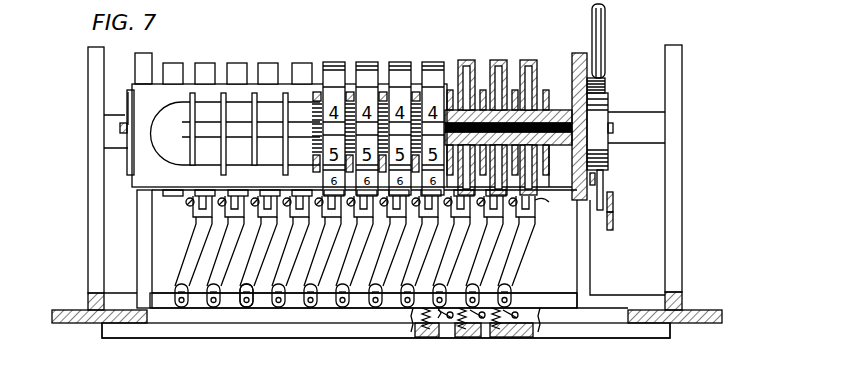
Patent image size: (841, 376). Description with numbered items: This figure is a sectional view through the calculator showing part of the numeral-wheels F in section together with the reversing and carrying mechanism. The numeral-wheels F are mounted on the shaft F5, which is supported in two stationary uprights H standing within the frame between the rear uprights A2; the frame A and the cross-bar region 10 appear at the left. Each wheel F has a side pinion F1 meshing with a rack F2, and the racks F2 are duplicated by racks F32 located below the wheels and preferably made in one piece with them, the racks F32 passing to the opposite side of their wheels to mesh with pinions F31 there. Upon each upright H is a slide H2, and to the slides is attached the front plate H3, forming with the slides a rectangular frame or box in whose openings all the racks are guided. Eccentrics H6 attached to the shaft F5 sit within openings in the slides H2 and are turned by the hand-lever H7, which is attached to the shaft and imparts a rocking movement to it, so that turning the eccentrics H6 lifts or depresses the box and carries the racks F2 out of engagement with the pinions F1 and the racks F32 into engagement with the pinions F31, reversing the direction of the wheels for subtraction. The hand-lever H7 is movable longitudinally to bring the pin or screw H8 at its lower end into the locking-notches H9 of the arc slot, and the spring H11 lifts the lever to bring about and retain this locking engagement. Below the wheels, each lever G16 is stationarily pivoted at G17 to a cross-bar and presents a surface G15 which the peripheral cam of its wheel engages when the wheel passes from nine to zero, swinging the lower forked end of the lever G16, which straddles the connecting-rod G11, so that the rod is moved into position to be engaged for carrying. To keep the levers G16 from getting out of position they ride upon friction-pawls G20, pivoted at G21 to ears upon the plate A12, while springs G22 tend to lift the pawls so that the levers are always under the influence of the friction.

The rear upright A2 is at (698, 213).
The frame A is at (160, 233).
The frame bar 10 is at (349, 265).
The stationary upright H is at (137, 204).
The front plate H3 is at (350, 120).
The numeral-wheel F is at (240, 63).
The rack F32 is at (253, 95).
The shaft F5 is at (508, 127).
The side pinion F1 is at (519, 97).
The rack F2 is at (258, 97).
The pinion F31 is at (539, 100).
The hand-lever H7 is at (606, 37).
The spring H11 is at (606, 82).
The eccentric H6 is at (609, 107).
The slide H2 is at (604, 178).
The pin or screw H8 is at (614, 205).
The locking-notch H9 is at (614, 219).
The pivot G17 is at (188, 207).
The lever G16 is at (528, 262).
The connecting-rod G11 is at (243, 308).
The surface G15 is at (540, 202).
The plate A12 is at (386, 322).
The friction-pawl G20 is at (416, 338).
The pivot G21 is at (448, 337).
The spring G22 is at (493, 336).